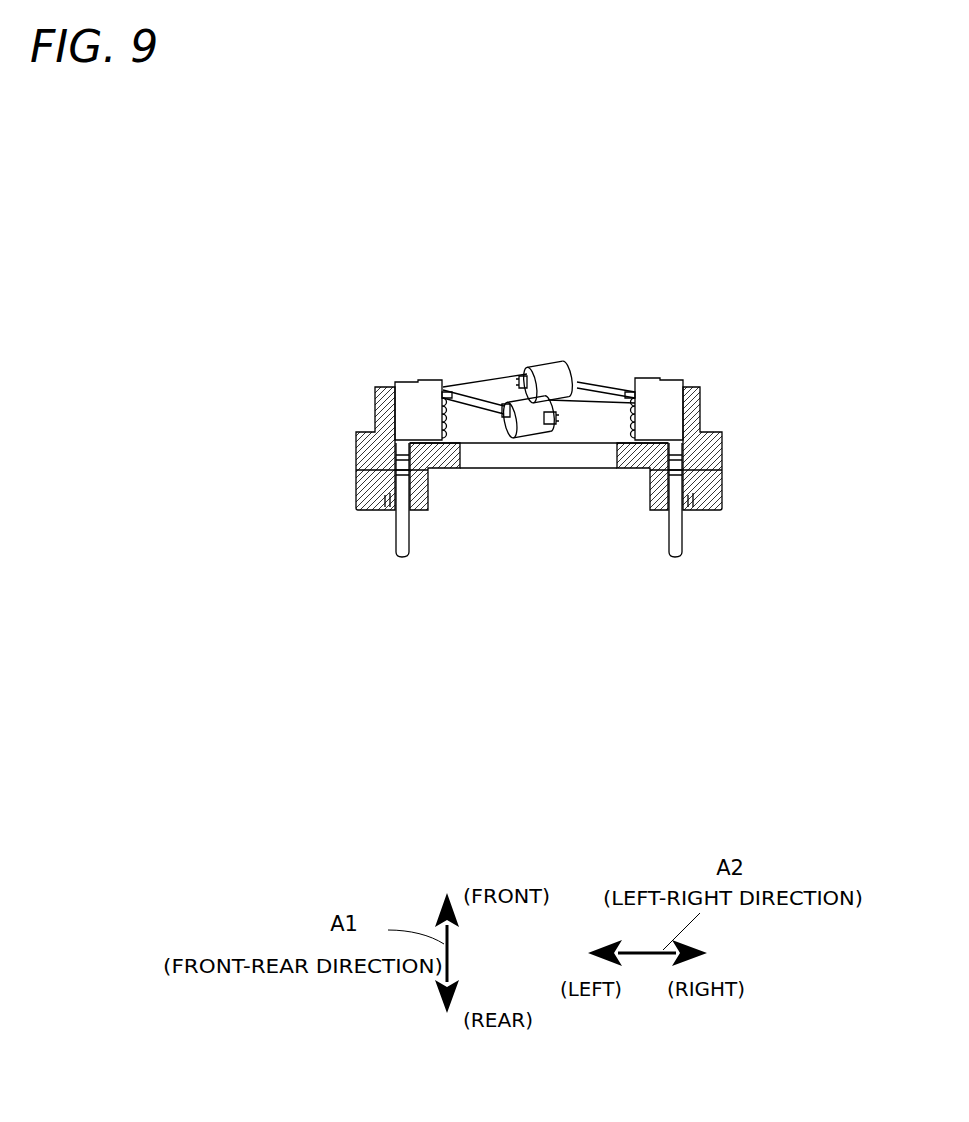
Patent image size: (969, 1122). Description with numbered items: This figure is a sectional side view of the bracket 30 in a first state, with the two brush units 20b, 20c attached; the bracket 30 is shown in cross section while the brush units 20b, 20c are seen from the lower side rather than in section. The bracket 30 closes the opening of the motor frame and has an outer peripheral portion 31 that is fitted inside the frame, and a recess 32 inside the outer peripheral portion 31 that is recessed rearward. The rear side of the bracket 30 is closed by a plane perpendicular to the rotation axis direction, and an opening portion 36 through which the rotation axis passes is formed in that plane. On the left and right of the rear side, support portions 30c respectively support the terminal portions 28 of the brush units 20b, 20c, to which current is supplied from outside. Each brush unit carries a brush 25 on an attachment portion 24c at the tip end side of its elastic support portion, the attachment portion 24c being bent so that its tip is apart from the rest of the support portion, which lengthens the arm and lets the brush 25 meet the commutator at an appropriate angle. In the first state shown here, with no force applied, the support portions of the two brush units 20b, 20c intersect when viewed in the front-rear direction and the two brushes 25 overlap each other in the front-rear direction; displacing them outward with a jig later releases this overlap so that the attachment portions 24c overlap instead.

The brush unit 20b is at (421, 355).
The brush unit 20c is at (663, 355).
The attachment portion 24c is at (524, 376).
The brush 25 is at (561, 367).
The terminal portion 28 is at (398, 543).
The bracket 30 is at (345, 392).
The support portion 30c is at (357, 500).
The outer peripheral portion 31 is at (703, 387).
The recess 32 is at (487, 387).
The opening portion 36 is at (460, 446).